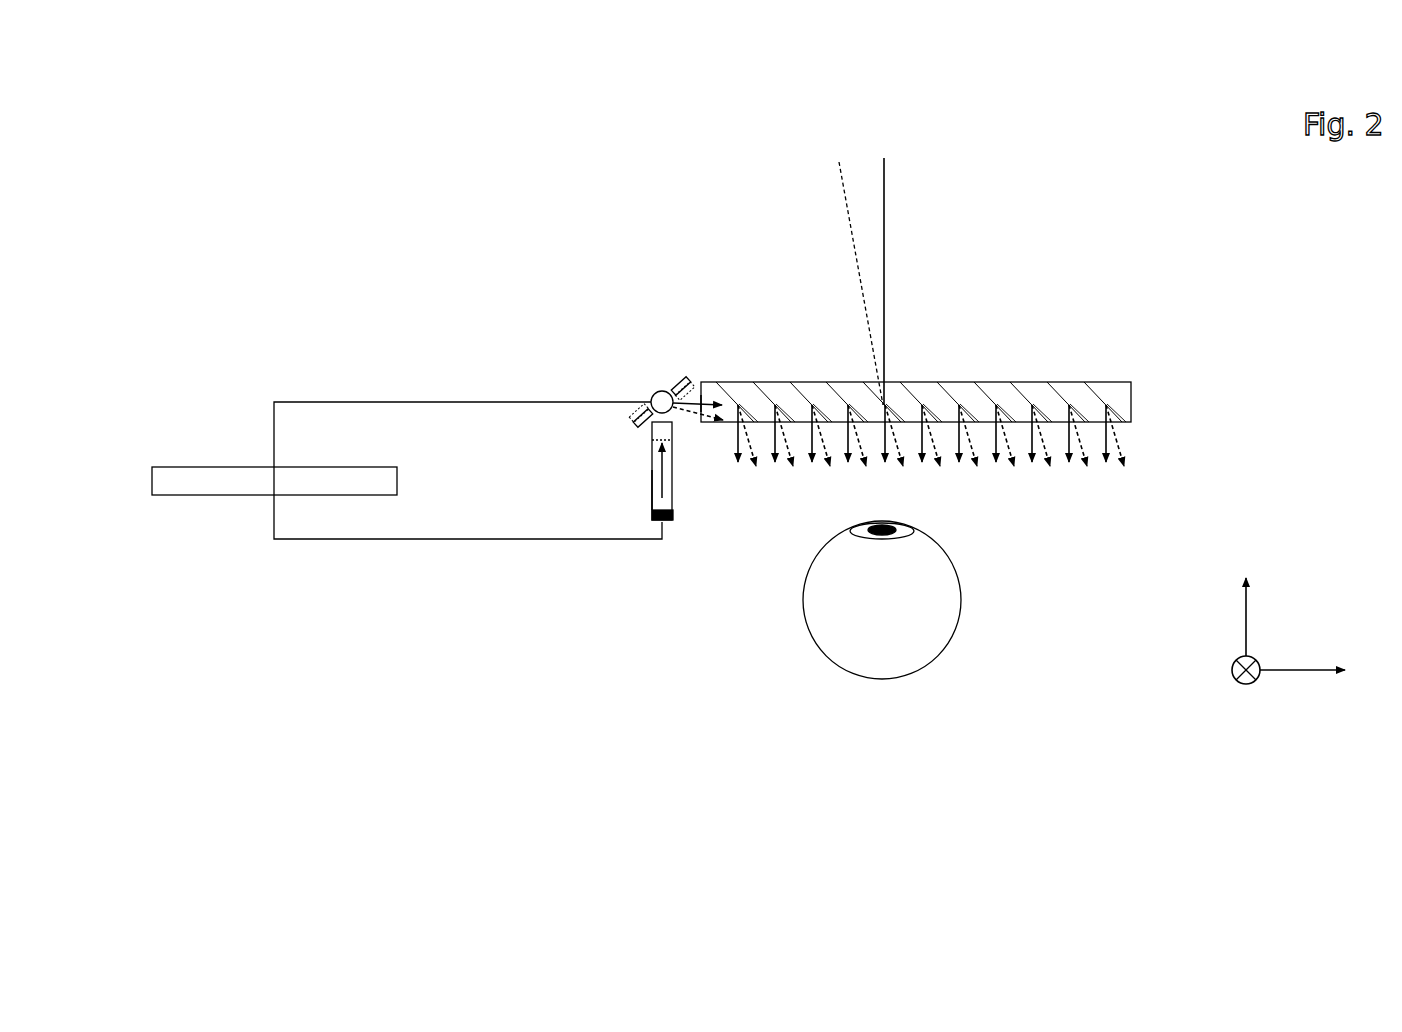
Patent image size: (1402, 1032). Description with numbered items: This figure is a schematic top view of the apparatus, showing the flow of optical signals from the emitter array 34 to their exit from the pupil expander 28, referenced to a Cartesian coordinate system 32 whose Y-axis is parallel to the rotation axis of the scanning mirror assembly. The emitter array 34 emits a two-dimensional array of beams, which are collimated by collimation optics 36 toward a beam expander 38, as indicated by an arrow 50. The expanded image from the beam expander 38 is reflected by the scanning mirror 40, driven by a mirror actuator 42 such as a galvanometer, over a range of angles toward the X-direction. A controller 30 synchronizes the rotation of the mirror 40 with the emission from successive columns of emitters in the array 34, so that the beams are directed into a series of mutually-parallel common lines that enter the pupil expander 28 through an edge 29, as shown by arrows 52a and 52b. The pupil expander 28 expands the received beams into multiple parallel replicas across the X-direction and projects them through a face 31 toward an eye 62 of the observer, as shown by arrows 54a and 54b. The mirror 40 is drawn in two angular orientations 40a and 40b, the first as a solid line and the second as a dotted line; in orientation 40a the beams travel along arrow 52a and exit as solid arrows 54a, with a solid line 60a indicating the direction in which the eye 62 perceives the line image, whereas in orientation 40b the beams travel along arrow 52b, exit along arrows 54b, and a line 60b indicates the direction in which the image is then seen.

The pupil expander 28 is at (1120, 395).
The edge 29 is at (707, 400).
The controller 30 is at (195, 490).
The face 31 is at (978, 435).
The Cartesian coordinate system 32 is at (1315, 626).
The emitter array 34 is at (653, 522).
The collimation optics 36 is at (652, 497).
The beam expander 38 is at (657, 430).
The scanning mirror 40 is at (624, 371).
The first angular orientation of scanning mirror 40a is at (645, 413).
The second angular orientation of scanning mirror 40b is at (637, 417).
The mirror actuator 42 is at (657, 390).
The arrow 50 is at (655, 468).
The arrow 52a is at (690, 403).
The arrow 52b is at (708, 408).
The solid arrows 54a is at (775, 440).
The arrows 54b is at (823, 446).
The solid line 60a is at (886, 284).
The line 60b is at (838, 188).
The eye 62 is at (907, 620).